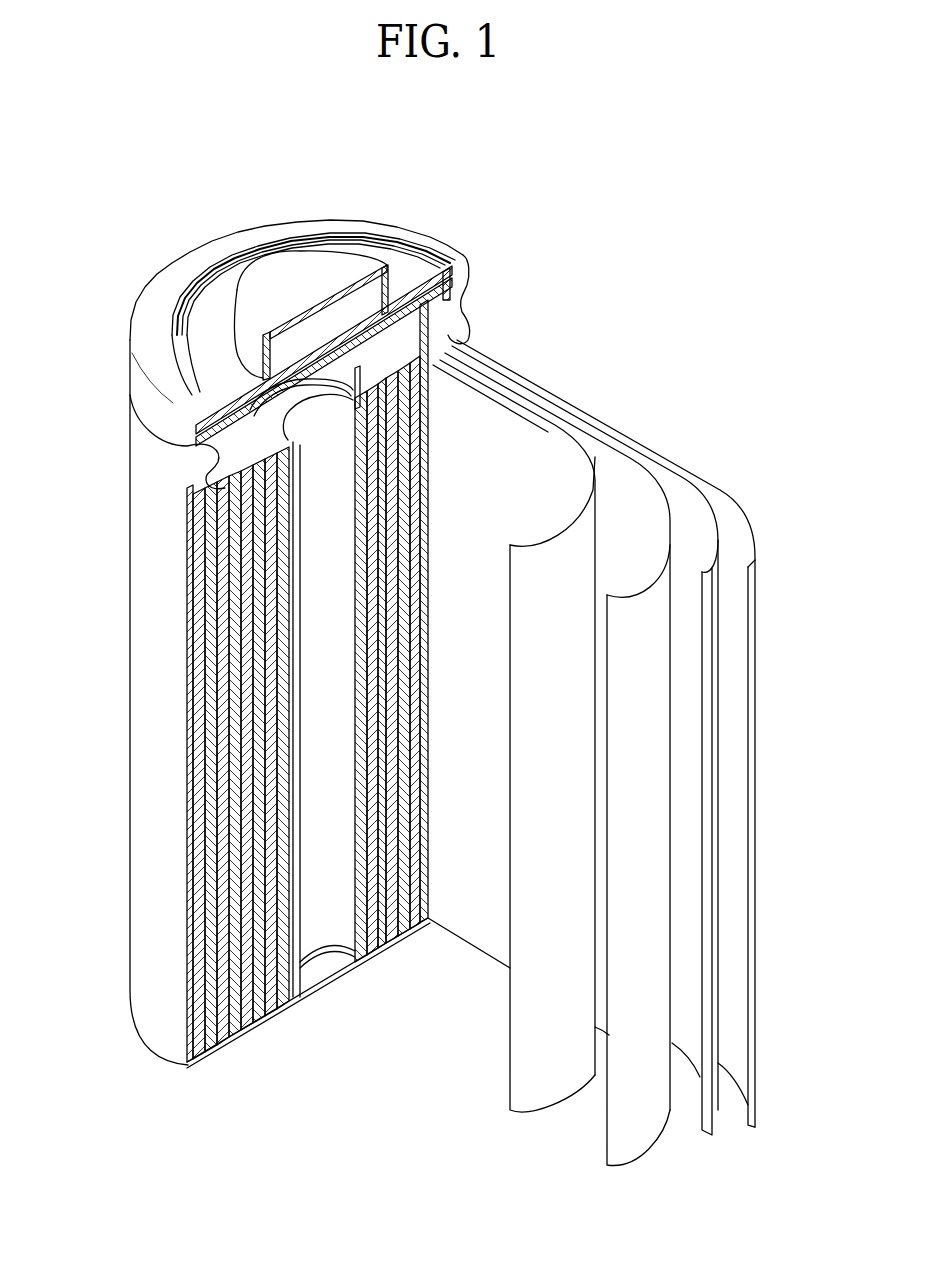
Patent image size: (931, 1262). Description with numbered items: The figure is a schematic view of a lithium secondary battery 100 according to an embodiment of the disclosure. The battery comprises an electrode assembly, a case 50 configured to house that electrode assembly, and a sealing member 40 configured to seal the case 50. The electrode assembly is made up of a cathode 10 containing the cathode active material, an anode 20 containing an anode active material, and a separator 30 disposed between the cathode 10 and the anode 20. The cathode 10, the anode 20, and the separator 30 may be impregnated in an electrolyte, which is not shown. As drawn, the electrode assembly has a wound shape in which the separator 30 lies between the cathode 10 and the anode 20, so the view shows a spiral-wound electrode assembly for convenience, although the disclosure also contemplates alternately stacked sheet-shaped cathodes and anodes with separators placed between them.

The lithium secondary battery 100 is at (537, 190).
The cathode 10 is at (633, 490).
The anode 20 is at (754, 548).
The separator 30 is at (548, 432).
The sealing member 40 is at (262, 283).
The case 50 is at (147, 648).